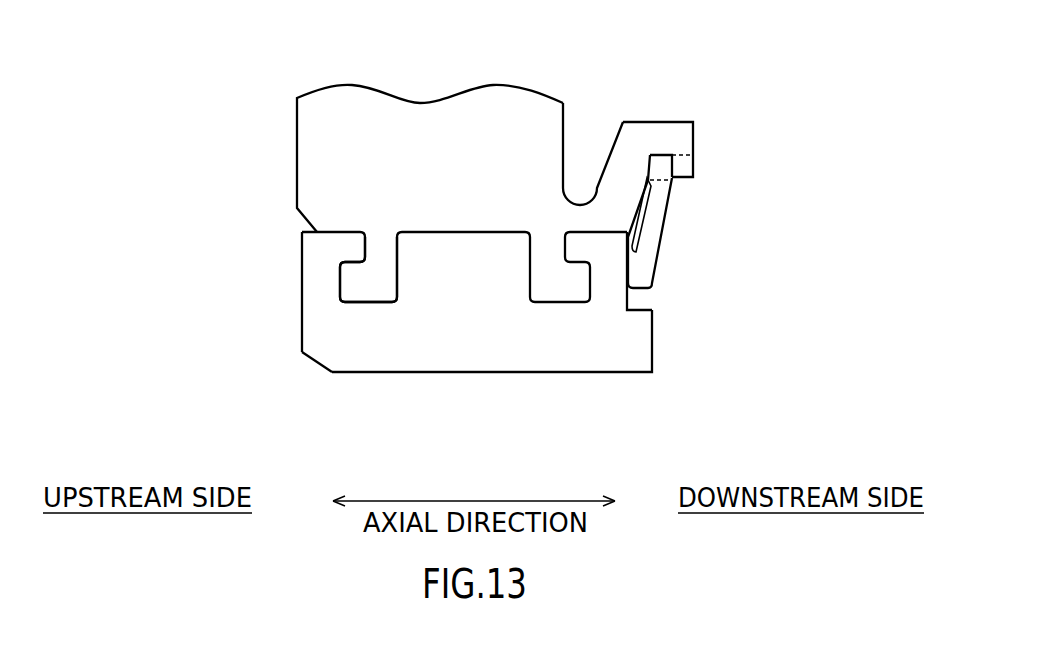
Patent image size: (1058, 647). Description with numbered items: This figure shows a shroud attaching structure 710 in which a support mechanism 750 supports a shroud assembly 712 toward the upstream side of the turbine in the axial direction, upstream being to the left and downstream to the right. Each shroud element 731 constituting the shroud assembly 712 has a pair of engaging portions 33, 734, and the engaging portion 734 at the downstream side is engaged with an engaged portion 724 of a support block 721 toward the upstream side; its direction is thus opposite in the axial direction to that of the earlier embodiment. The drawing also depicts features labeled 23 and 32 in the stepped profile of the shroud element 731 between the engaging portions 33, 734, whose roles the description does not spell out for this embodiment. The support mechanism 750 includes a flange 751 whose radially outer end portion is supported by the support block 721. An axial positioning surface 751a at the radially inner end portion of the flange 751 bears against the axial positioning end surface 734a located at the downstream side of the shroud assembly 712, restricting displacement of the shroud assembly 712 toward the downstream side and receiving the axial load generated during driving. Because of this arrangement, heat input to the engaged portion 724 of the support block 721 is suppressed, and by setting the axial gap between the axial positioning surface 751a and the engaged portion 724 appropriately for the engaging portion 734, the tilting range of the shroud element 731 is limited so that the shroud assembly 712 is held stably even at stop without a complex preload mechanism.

The shroud attaching structure 710 is at (697, 93).
The support block 721 is at (295, 168).
The engaging portion 734 is at (600, 253).
The support mechanism 750 is at (677, 205).
The flange 751 is at (665, 228).
The axial positioning surface 751a is at (618, 270).
The engaging portion 33 is at (317, 252).
The shroud element 731 is at (300, 332).
The shroud assembly 712 is at (332, 374).
The groove 23 is at (370, 292).
The rib 32 is at (463, 362).
The engaged portion 724 is at (558, 293).
The axial positioning end surface 734a is at (627, 298).